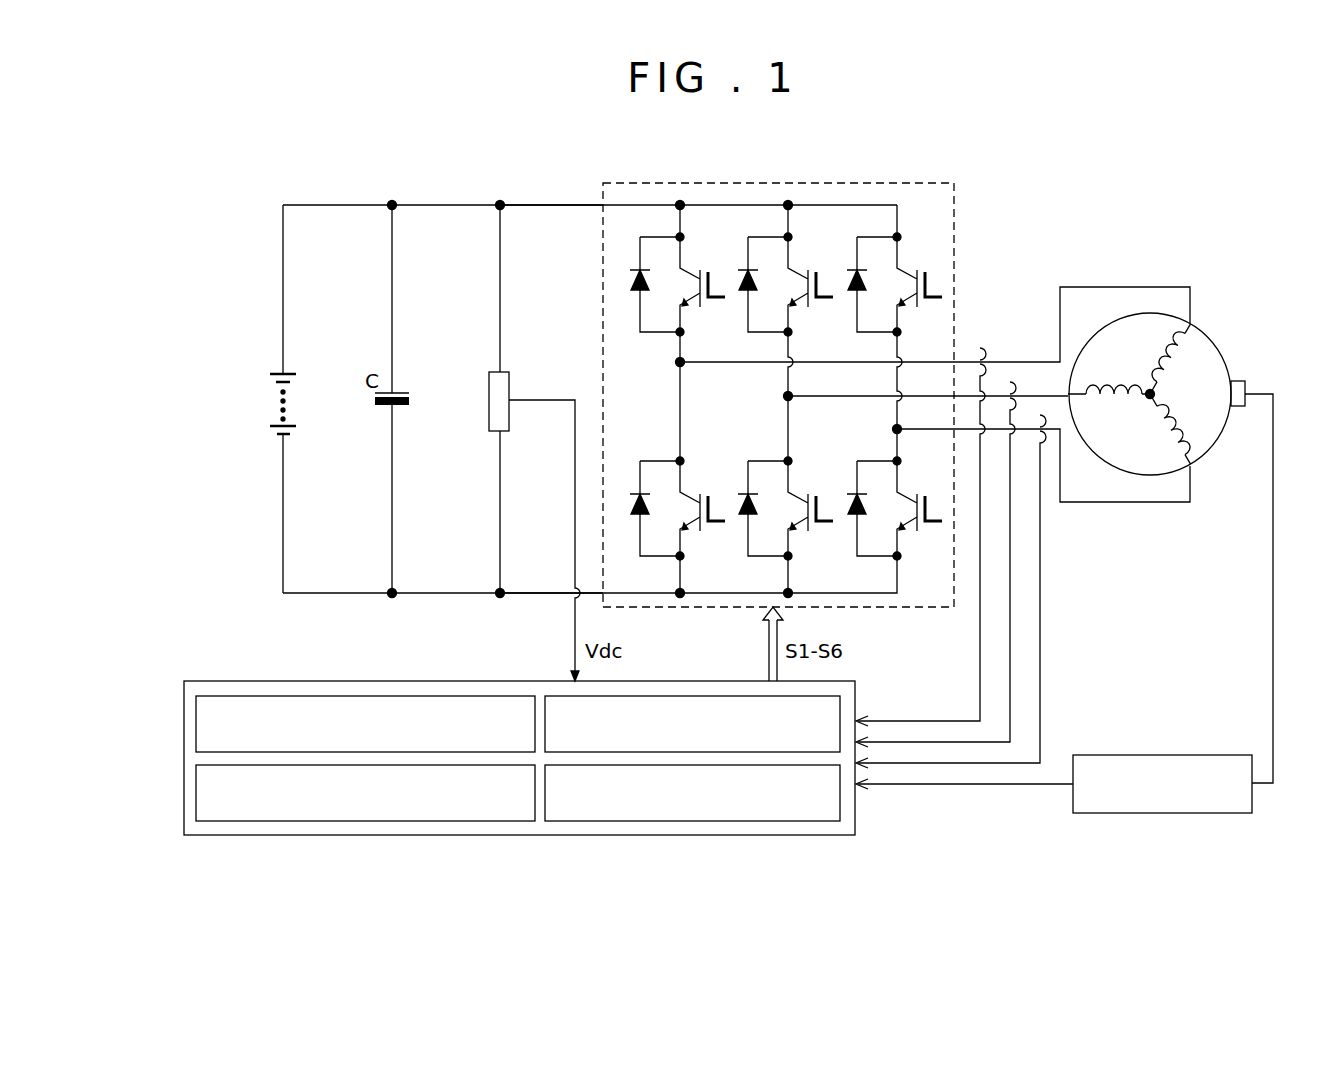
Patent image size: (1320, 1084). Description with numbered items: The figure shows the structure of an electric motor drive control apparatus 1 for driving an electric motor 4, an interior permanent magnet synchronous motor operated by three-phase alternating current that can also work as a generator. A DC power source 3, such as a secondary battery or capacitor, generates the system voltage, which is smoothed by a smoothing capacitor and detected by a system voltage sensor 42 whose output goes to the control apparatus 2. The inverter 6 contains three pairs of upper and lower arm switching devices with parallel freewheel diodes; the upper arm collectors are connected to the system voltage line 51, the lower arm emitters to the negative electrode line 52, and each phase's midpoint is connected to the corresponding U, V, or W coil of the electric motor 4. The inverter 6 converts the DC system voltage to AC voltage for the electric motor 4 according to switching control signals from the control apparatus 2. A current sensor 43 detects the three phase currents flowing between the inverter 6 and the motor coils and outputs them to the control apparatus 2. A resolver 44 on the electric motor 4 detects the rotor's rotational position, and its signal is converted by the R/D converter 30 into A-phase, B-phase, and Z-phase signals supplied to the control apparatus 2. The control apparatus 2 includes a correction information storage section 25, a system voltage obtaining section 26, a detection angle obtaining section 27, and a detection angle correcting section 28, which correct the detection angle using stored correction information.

The electric motor drive control apparatus 1 is at (258, 172).
The control apparatus 2 is at (578, 835).
The DC power source 3 is at (290, 372).
The electric motor 4 is at (1213, 340).
The inverter 6 is at (775, 183).
The correction information storage section 25 is at (196, 725).
The system voltage obtaining section 26 is at (196, 794).
The detection angle obtaining section 27 is at (695, 696).
The detection angle correcting section 28 is at (702, 821).
The resolver/digital (R/D) converter 30 is at (1162, 755).
The system voltage sensor 42 is at (500, 372).
The current sensor 43 is at (983, 357).
The resolver 44 is at (1240, 380).
The system voltage line 51 is at (562, 205).
The negative electrode line 52 is at (527, 595).